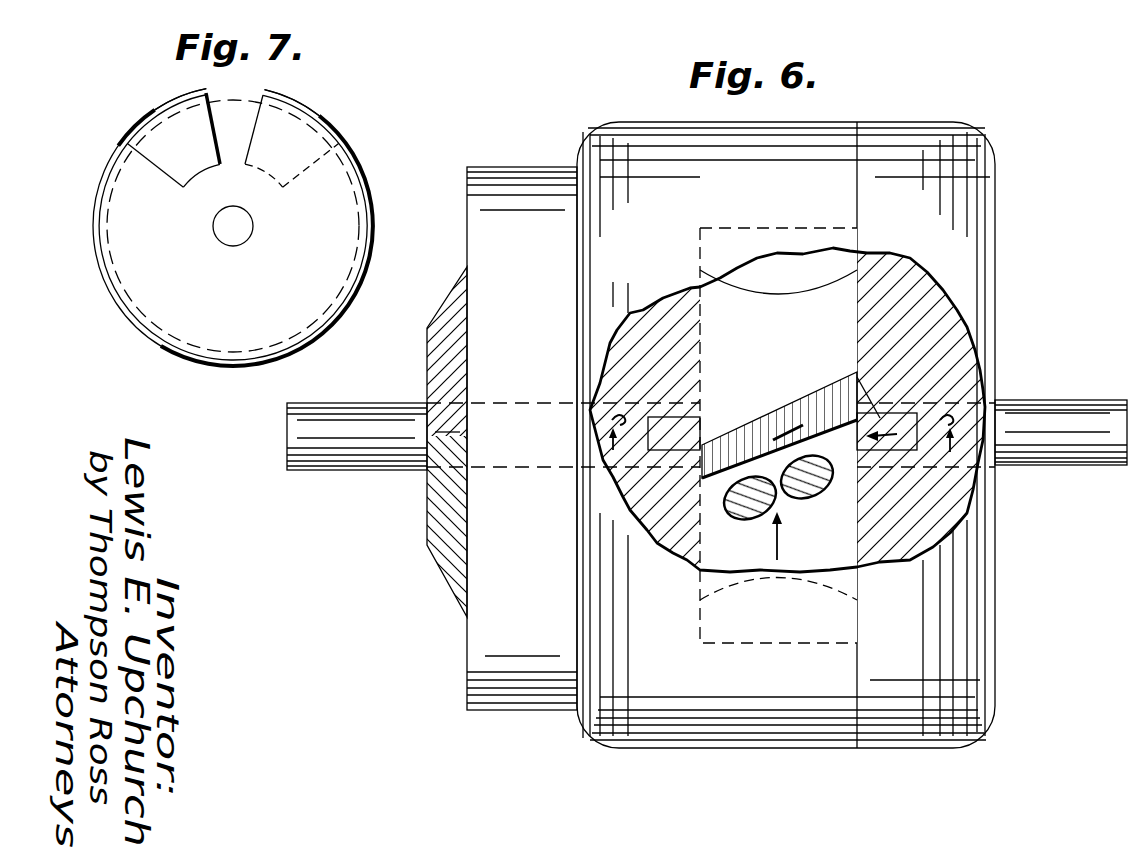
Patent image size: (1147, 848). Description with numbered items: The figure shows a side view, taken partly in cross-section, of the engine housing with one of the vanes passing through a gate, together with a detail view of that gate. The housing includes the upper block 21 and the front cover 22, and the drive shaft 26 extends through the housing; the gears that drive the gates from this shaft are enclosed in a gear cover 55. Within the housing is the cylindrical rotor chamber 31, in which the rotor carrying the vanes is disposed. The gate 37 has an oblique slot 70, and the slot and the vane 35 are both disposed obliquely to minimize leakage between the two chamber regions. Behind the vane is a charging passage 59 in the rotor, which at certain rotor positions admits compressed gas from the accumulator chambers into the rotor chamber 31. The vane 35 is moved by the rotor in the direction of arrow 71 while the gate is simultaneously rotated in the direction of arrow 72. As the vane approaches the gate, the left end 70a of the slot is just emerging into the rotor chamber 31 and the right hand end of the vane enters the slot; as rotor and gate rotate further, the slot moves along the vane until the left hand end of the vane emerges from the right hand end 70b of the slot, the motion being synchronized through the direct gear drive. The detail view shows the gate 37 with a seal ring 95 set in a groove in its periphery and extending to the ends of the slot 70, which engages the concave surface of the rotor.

In FIG. 6, the upper block 21 is at (700, 150).
In FIG. 6, the front cover 22 is at (963, 188).
In FIG. 6, the drive shaft 26 is at (347, 420).
In FIG. 6, the rotor chamber 31 is at (827, 545).
In FIG. 6, the vane 35 is at (798, 417).
In FIG. 7, the gate 37 is at (150, 285).
In FIG. 6, the gate 37 is at (897, 437).
In FIG. 6, the gear cover 55 is at (497, 272).
In FIG. 6, the charging passages 59 is at (757, 505).
In FIG. 7, the slot 70 is at (237, 127).
In FIG. 6, the slot 70 is at (757, 430).
In FIG. 7, the left end of slot 70a is at (210, 143).
In FIG. 6, the left end of slot 70a is at (700, 446).
In FIG. 7, the right hand end of slot 70b is at (265, 112).
In FIG. 6, the right hand end of slot 70b is at (872, 422).
In FIG. 6, the arrow 71 is at (770, 542).
In FIG. 6, the arrow 72 is at (857, 377).
In FIG. 7, the seal ring 95 is at (177, 345).